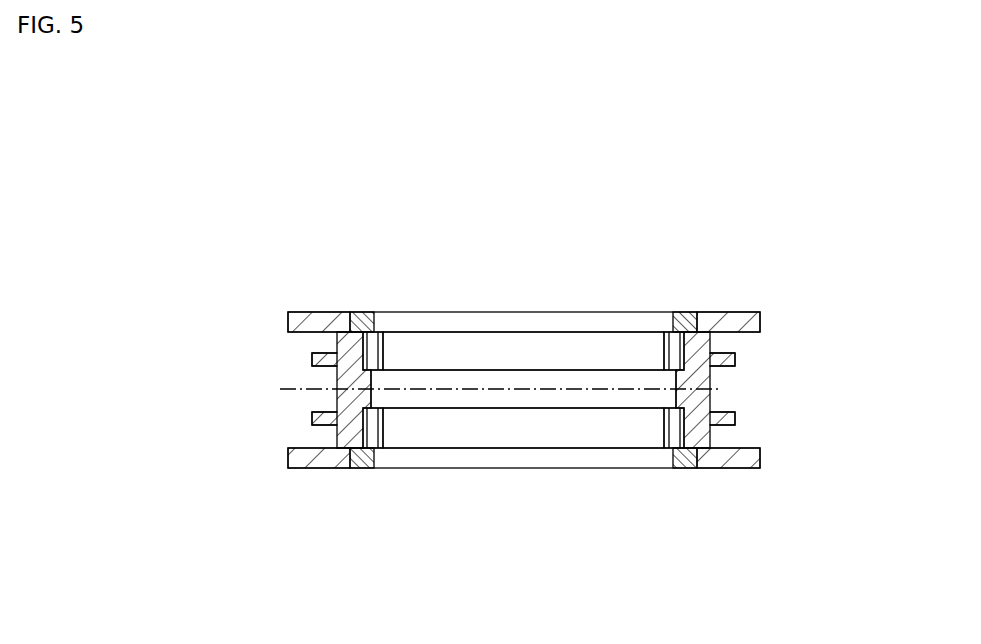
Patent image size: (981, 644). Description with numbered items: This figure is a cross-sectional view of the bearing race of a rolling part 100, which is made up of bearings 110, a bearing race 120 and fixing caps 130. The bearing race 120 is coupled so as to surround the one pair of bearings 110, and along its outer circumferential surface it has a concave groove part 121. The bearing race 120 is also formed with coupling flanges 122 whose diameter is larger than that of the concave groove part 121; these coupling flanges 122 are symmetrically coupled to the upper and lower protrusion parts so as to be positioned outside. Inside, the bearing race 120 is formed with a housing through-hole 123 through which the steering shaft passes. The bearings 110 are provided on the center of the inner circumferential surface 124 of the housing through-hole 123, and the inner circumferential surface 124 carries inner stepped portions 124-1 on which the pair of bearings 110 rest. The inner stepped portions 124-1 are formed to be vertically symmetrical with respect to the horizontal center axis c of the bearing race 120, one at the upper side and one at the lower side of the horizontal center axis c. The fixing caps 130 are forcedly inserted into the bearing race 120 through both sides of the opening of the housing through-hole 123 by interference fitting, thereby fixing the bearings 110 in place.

The rolling part 100 is at (197, 134).
The bearings 110 is at (337, 339).
The bearing race 120 is at (320, 476).
The concave groove part 121 is at (300, 388).
The coupling flanges 122 is at (760, 318).
The housing through-hole 123 is at (528, 360).
The inner circumferential surface 124 is at (713, 373).
The inner stepped portions 124-1 is at (668, 314).
The fixing caps 130 is at (363, 312).
The horizontal center axis c is at (337, 387).